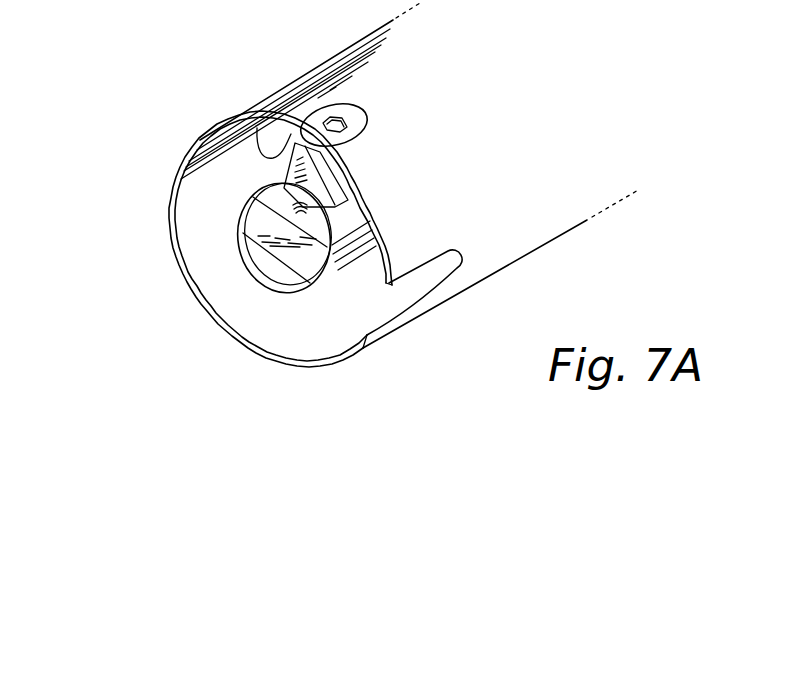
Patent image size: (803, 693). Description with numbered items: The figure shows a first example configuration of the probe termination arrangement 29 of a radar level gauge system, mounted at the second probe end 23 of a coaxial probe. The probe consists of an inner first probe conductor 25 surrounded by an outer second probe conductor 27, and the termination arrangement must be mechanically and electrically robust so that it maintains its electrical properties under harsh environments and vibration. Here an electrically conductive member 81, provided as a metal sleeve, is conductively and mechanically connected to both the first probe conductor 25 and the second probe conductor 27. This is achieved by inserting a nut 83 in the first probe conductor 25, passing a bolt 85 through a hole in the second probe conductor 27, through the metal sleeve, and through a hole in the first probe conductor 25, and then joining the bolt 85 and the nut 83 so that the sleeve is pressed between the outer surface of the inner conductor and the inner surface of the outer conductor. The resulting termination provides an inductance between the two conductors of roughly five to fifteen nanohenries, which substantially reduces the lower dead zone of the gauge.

The second probe end 23 is at (311, 414).
The first probe conductor 25 is at (267, 275).
The second probe conductor 27 is at (260, 355).
The probe termination arrangement 29 is at (232, 196).
The electrically conductive member 81 is at (303, 168).
The nut 83 is at (240, 234).
The bolt 85 is at (312, 117).